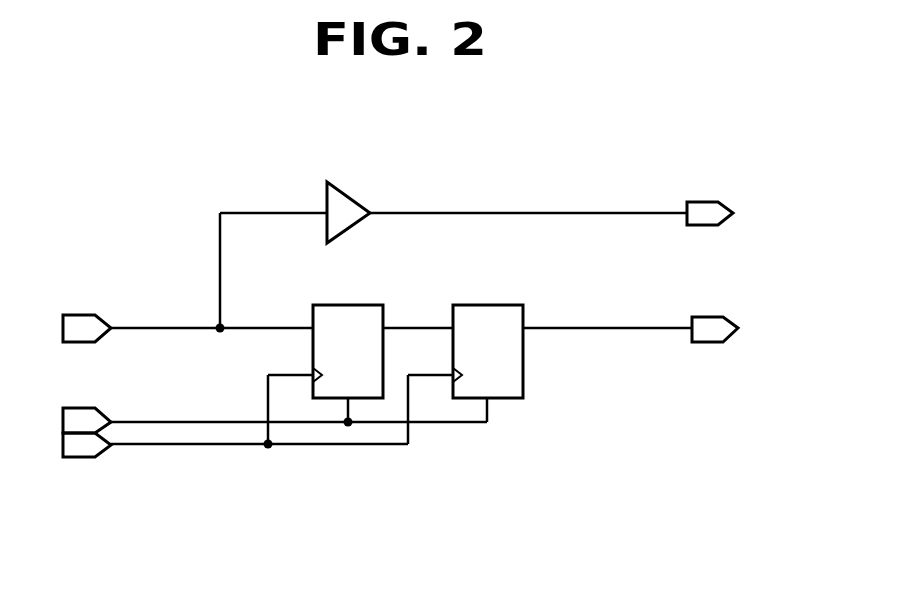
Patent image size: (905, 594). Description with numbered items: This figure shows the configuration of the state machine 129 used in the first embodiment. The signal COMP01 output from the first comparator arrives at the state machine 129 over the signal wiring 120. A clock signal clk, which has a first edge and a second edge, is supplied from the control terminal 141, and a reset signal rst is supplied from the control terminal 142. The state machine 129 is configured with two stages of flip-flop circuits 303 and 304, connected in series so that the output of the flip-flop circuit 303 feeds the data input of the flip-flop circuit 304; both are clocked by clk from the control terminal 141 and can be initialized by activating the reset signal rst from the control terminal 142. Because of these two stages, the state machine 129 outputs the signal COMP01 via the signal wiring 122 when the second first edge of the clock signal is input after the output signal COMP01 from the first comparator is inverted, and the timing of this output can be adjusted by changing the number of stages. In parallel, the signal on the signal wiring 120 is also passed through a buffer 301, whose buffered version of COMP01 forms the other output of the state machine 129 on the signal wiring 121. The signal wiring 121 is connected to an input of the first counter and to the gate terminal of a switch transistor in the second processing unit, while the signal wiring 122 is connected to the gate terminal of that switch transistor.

The signal wiring 120 is at (76, 315).
The signal wiring 121 is at (725, 202).
The signal wiring 122 is at (730, 317).
The state machine 129 is at (182, 493).
The control terminal 141 is at (76, 458).
The control terminal 142 is at (74, 408).
The buffer 301 is at (350, 197).
The flip-flop circuit 303 is at (360, 305).
The flip-flop circuit 304 is at (490, 305).